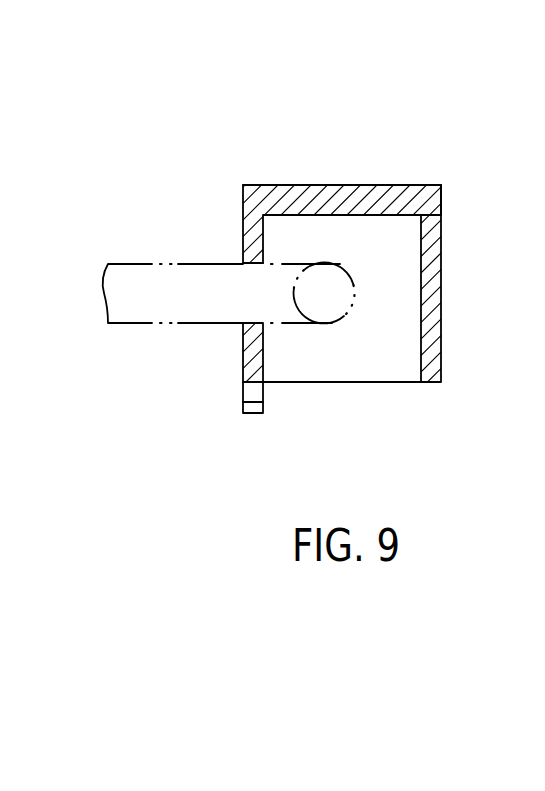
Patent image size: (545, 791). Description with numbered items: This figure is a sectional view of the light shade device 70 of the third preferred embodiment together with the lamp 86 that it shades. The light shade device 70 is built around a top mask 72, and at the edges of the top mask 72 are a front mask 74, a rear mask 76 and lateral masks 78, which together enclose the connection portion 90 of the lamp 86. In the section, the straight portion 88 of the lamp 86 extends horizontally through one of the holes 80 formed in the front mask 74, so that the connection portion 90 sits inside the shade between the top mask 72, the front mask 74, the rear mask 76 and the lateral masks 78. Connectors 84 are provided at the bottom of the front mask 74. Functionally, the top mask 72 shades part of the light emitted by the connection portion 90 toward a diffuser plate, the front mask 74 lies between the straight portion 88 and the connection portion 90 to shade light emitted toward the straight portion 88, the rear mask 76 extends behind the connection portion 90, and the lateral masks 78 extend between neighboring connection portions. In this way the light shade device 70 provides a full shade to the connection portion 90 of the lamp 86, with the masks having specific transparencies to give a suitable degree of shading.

The light shade device 70 is at (472, 143).
The top mask 72 is at (349, 185).
The front mask 74 is at (242, 240).
The rear mask 76 is at (433, 268).
The lateral masks 78 is at (375, 355).
The holes 80 is at (243, 349).
The connectors 84 is at (253, 410).
The lamp 86 is at (208, 301).
The straight portions 88 is at (138, 264).
The connection portion 90 is at (323, 305).